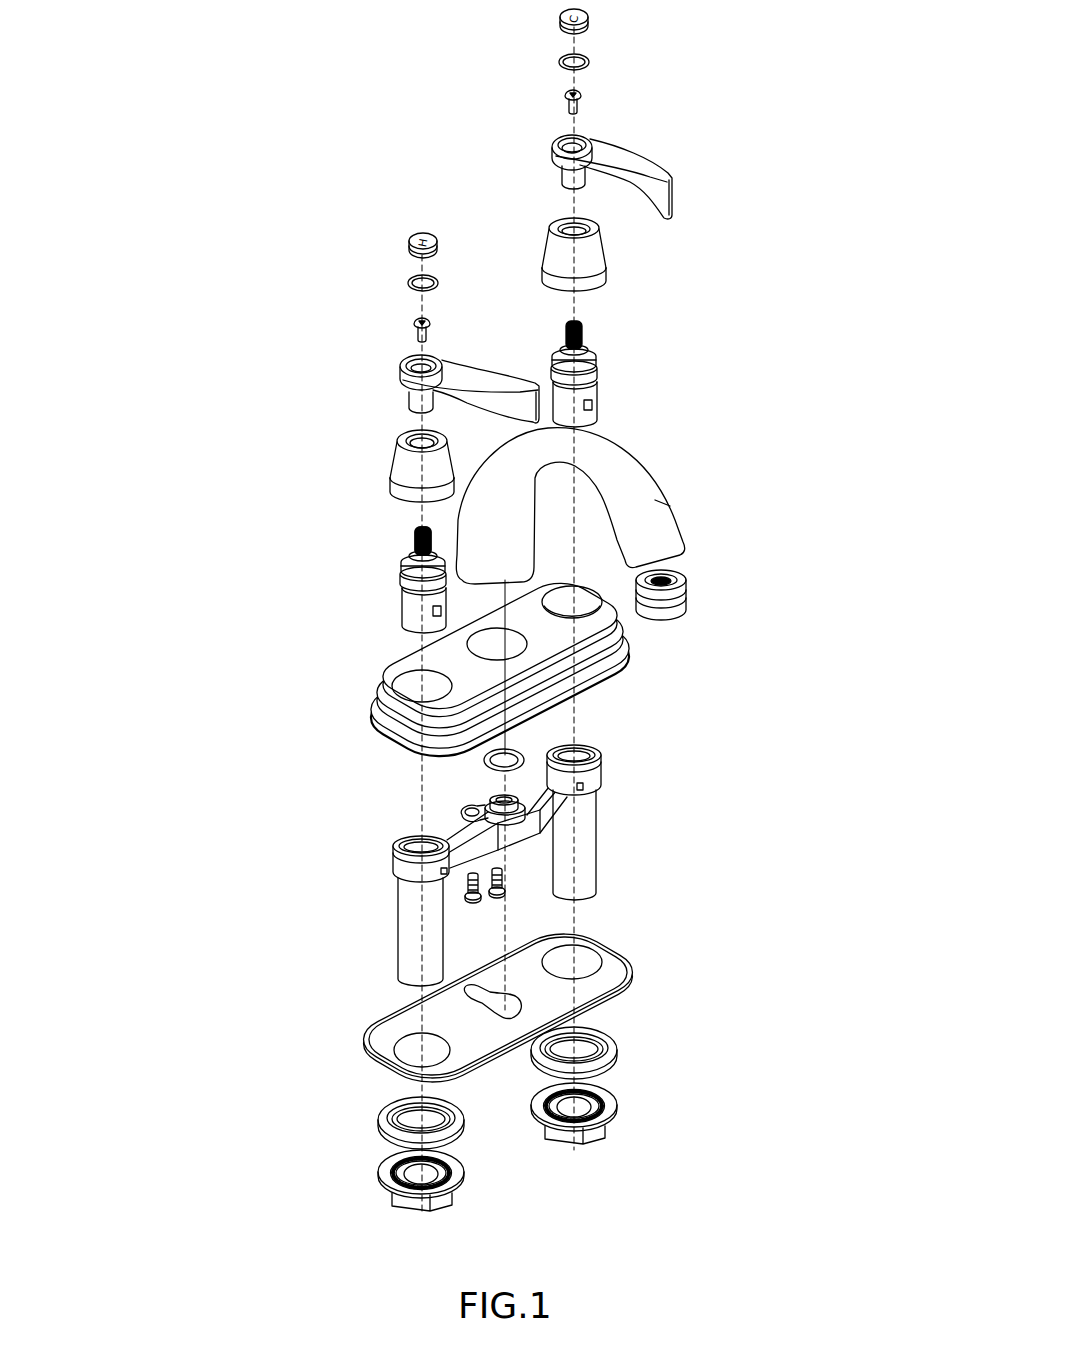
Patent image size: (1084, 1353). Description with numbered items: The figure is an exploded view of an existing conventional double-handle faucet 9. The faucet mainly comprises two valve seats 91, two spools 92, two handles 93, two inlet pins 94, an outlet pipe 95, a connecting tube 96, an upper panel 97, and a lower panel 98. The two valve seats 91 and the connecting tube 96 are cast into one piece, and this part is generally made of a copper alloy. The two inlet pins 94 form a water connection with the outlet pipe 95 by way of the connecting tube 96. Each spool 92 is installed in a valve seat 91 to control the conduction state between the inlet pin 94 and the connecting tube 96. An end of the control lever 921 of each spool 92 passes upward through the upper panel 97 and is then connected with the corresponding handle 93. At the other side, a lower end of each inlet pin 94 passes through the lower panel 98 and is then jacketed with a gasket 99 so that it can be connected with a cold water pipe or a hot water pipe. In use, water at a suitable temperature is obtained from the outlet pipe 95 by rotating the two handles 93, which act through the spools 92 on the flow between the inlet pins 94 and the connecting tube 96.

The double-handle faucet 9 is at (296, 124).
The valve seat 91 is at (400, 883).
The spool 92 is at (393, 593).
The control lever 921 is at (407, 537).
The handle 93 is at (400, 375).
The inlet pin 94 is at (407, 950).
The outlet pipe 95 is at (655, 510).
The connecting tube 96 is at (445, 815).
The upper panel 97 is at (633, 643).
The lower panel 98 is at (618, 952).
The gasket 99 is at (612, 1050).